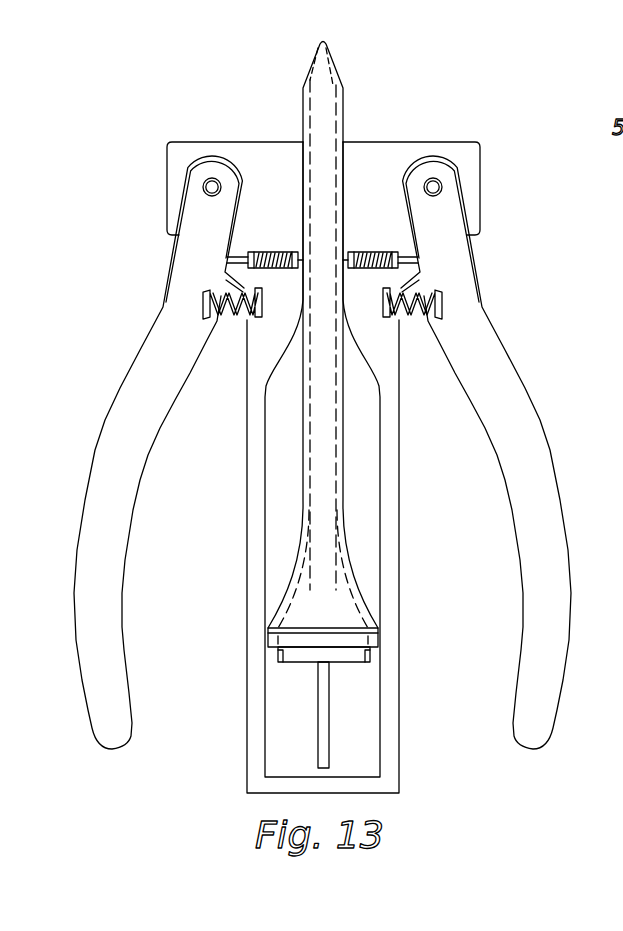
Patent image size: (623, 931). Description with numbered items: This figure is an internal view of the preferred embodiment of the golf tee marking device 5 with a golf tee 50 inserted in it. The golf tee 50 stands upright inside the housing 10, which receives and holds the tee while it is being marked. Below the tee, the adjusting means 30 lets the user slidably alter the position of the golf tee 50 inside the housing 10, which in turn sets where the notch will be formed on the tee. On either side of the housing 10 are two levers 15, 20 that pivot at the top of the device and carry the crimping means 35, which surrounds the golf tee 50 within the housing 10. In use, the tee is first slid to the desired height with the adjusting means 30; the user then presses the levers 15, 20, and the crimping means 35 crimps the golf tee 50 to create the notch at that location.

The golf tee marking device 5 is at (131, 152).
The housing 10 is at (387, 777).
The lever 15 is at (545, 740).
The lever 20 is at (113, 748).
The adjusting means 30 is at (283, 663).
The crimping means 35 is at (330, 235).
The golf tee 50 is at (338, 480).